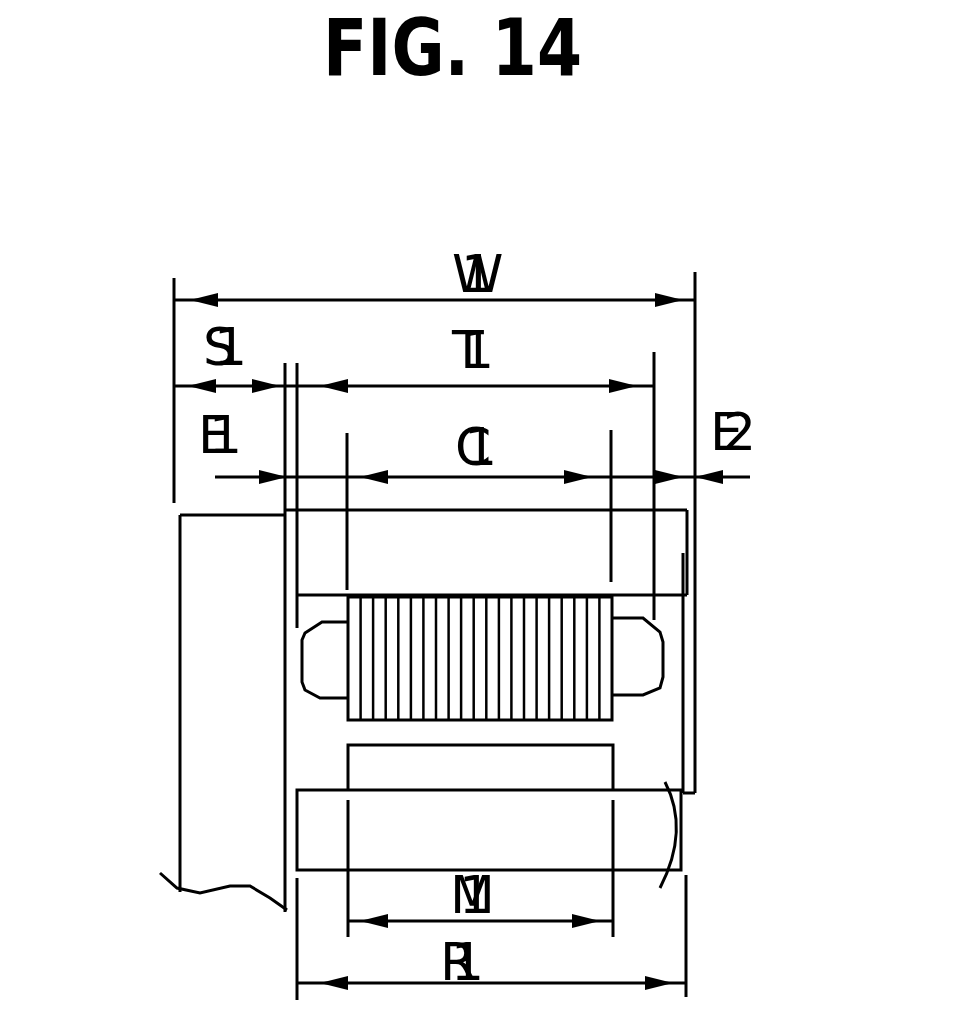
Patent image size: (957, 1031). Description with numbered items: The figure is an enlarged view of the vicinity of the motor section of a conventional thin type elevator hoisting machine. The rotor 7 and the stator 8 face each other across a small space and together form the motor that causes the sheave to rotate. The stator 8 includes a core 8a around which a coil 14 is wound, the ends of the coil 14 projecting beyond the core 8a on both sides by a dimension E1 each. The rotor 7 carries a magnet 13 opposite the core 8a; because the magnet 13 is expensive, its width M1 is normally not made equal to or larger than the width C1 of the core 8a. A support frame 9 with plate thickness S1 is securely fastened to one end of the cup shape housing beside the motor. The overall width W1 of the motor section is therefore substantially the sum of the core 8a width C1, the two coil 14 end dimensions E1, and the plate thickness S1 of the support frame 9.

The rotor 7 is at (555, 815).
The stator 8 is at (512, 550).
The core 8a is at (490, 603).
The support frame 9 is at (215, 704).
The magnet 13 is at (587, 768).
The coil 14 is at (663, 658).